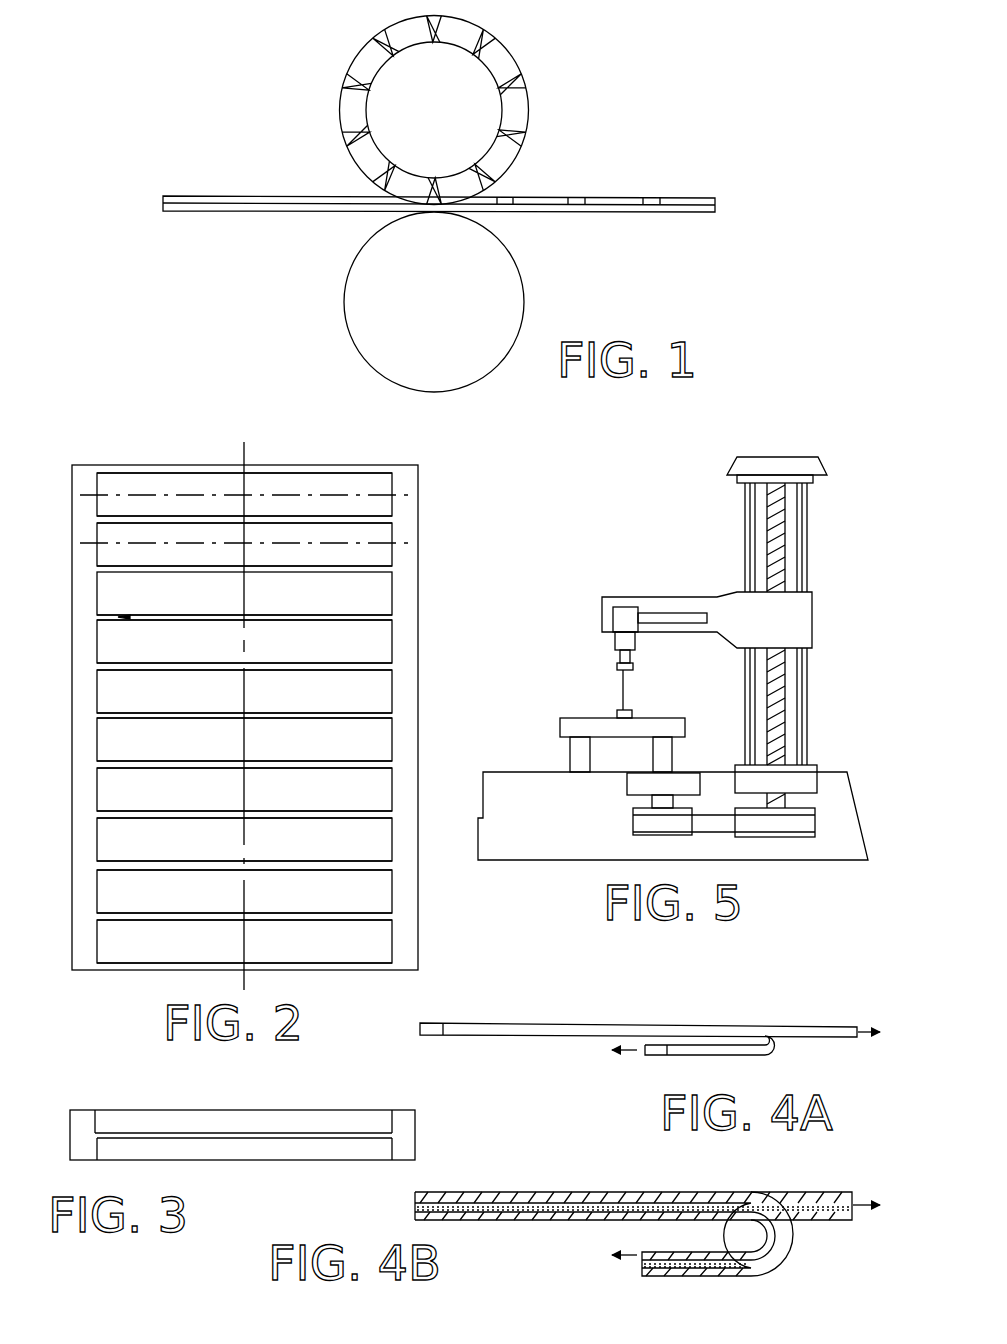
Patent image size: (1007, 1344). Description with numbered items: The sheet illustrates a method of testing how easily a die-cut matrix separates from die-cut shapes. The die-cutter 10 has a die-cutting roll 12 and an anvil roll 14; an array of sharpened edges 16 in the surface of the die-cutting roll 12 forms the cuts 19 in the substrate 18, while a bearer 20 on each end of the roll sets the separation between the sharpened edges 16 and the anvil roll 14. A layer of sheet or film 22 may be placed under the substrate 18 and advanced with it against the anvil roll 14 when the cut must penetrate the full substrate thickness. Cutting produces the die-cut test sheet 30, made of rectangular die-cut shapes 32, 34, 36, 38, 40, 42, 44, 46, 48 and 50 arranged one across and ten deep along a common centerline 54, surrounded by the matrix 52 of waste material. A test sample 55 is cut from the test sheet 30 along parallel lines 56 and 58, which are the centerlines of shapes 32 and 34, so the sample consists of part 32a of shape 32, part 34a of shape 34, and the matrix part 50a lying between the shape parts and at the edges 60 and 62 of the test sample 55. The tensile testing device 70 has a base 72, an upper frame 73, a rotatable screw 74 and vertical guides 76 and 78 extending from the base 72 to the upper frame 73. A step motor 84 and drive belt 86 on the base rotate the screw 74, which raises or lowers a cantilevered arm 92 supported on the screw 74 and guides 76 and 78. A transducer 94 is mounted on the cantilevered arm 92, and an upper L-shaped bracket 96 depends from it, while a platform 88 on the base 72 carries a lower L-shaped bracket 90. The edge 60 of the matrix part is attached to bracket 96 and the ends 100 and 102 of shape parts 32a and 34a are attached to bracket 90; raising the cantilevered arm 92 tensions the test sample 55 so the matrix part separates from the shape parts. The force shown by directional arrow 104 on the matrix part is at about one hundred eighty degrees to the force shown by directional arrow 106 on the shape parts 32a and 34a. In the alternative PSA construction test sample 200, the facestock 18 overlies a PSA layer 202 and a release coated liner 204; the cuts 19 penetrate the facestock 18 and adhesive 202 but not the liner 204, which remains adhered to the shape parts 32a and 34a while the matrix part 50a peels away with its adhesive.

In FIG. 1, the die-cutter 10 is at (562, 70).
In FIG. 1, the die-cutting roll 12 is at (361, 50).
In FIG. 1, the anvil roll 14 is at (520, 262).
In FIG. 1, the sharpened edges 16 is at (472, 42).
In FIG. 1, the substrate 18 is at (220, 196).
In FIG. 2, the substrate 18 is at (90, 464).
In FIG. 3, the substrate 18 is at (70, 1118).
In FIG. 4A, the substrate 18 is at (472, 1024).
In FIG. 4B, the substrate 18 is at (588, 1192).
In FIG. 1, the cuts 19 is at (520, 197).
In FIG. 2, the cuts 19 is at (268, 472).
In FIG. 3, the cuts 19 is at (97, 1121).
In FIG. 4A, the cuts 19 is at (443, 1035).
In FIG. 4B, the cuts 19 is at (415, 1195).
In FIG. 1, the bearer 20 is at (339, 104).
In FIG. 1, the layer of sheet or film 22 is at (216, 212).
In FIG. 2, the die-cut test sheet 30 is at (183, 438).
In FIG. 2, the die-cut shape 32 is at (97, 505).
In FIG. 2, the part of shape 32 32a is at (363, 507).
In FIG. 3, the part of shape 32 32a is at (333, 1120).
In FIG. 4A, the part of shape 32 32a is at (761, 1006).
In FIG. 4B, the part of shape 32 32a is at (632, 1212).
In FIG. 2, the die-cut shape 34 is at (95, 557).
In FIG. 2, the part of shape 34 34a is at (375, 535).
In FIG. 3, the part of shape 34 34a is at (275, 1152).
In FIG. 4A, the part of shape 34 34a is at (807, 1024).
In FIG. 4B, the part of shape 34 34a is at (745, 1172).
In FIG. 5, the part of shape 34 34a is at (627, 704).
In FIG. 2, the die-cut shape 36 is at (96, 590).
In FIG. 2, the die-cut shape 38 is at (95, 642).
In FIG. 2, the die-cut shape 40 is at (95, 693).
In FIG. 2, the die-cut shape 42 is at (97, 748).
In FIG. 2, the die-cut shape 44 is at (96, 792).
In FIG. 2, the die-cut shape 46 is at (96, 845).
In FIG. 2, the die-cut shape 48 is at (96, 892).
In FIG. 2, the die-cut shape 50 is at (96, 945).
In FIG. 3, the liner / backing portion 50a is at (383, 1138).
In FIG. 4A, the liner / backing portion 50a is at (722, 1057).
In FIG. 4B, the liner / backing portion 50a is at (702, 1276).
In FIG. 5, the liner / backing portion 50a is at (622, 672).
In FIG. 2, the matrix 52 is at (330, 465).
In FIG. 2, the common centerline 54 is at (245, 743).
In FIG. 2, the test sample 55 is at (226, 503).
In FIG. 3, the test sample 55 is at (227, 1110).
In FIG. 4A, the test sample 55 is at (598, 1024).
In FIG. 5, the test sample 55 is at (623, 698).
In FIG. 2, the line 56 is at (123, 493).
In FIG. 2, the line 58 is at (352, 546).
In FIG. 3, the edge of test sample 60 is at (415, 1148).
In FIG. 3, the edge of test sample 62 is at (70, 1138).
In FIG. 5, the tensile testing device 70 is at (855, 468).
In FIG. 5, the base 72 is at (862, 823).
In FIG. 5, the upper frame 73 is at (762, 462).
In FIG. 5, the rotatable screw 74 is at (783, 510).
In FIG. 5, the vertical guide 76 is at (745, 498).
In FIG. 5, the vertical guide 78 is at (807, 530).
In FIG. 5, the step motor 84 is at (627, 783).
In FIG. 5, the drive belt 86 is at (717, 832).
In FIG. 5, the platform 88 is at (560, 730).
In FIG. 5, the lower L-shaped bracket 90 is at (637, 716).
In FIG. 5, the cantilevered arm 92 is at (712, 597).
In FIG. 5, the transducer 94 is at (627, 610).
In FIG. 5, the upper L-shaped bracket 96 is at (637, 668).
In FIG. 3, the end of shape part 32a 100 is at (393, 1122).
In FIG. 3, the end of shape part 34a 102 is at (397, 1157).
In FIG. 4A, the directional arrow 104 is at (633, 1055).
In FIG. 4B, the directional arrow 104 is at (630, 1260).
In FIG. 4A, the directional arrow 106 is at (885, 1007).
In FIG. 4B, the directional arrow 106 is at (870, 1207).
In FIG. 4B, the PSA construction test sample 200 is at (558, 1183).
In FIG. 4B, the PSA layer 202 is at (625, 1192).
In FIG. 4B, the release coated liner 204 is at (493, 1220).